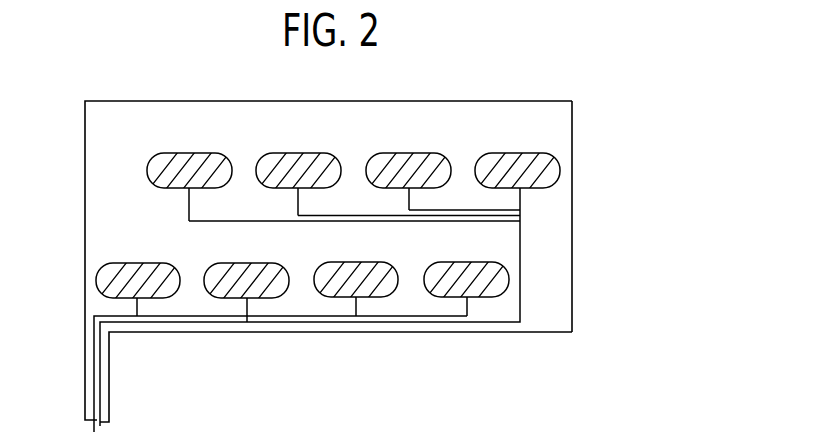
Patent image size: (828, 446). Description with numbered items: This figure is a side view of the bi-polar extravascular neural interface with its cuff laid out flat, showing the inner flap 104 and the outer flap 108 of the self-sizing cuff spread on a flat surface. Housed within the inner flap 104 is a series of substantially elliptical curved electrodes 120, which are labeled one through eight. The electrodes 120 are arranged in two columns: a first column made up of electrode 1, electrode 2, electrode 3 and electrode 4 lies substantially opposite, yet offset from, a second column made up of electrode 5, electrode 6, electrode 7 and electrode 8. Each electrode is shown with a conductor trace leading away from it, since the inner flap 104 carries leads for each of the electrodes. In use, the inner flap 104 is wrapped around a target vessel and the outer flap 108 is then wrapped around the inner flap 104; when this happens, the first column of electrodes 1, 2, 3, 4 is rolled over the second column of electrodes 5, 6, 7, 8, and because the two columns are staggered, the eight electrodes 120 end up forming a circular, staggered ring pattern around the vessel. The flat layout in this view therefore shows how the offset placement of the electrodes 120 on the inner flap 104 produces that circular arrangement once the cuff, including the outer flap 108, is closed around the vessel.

The inner flap 104 is at (111, 112).
The outer flap 108 is at (572, 178).
The electrodes 120 is at (327, 236).
The electrode 1 is at (138, 275).
The electrode 2 is at (246, 278).
The electrode 3 is at (356, 275).
The electrode 4 is at (466, 275).
The electrode 5 is at (189, 172).
The electrode 6 is at (298, 169).
The electrode 7 is at (408, 166).
The electrode 8 is at (517, 156).